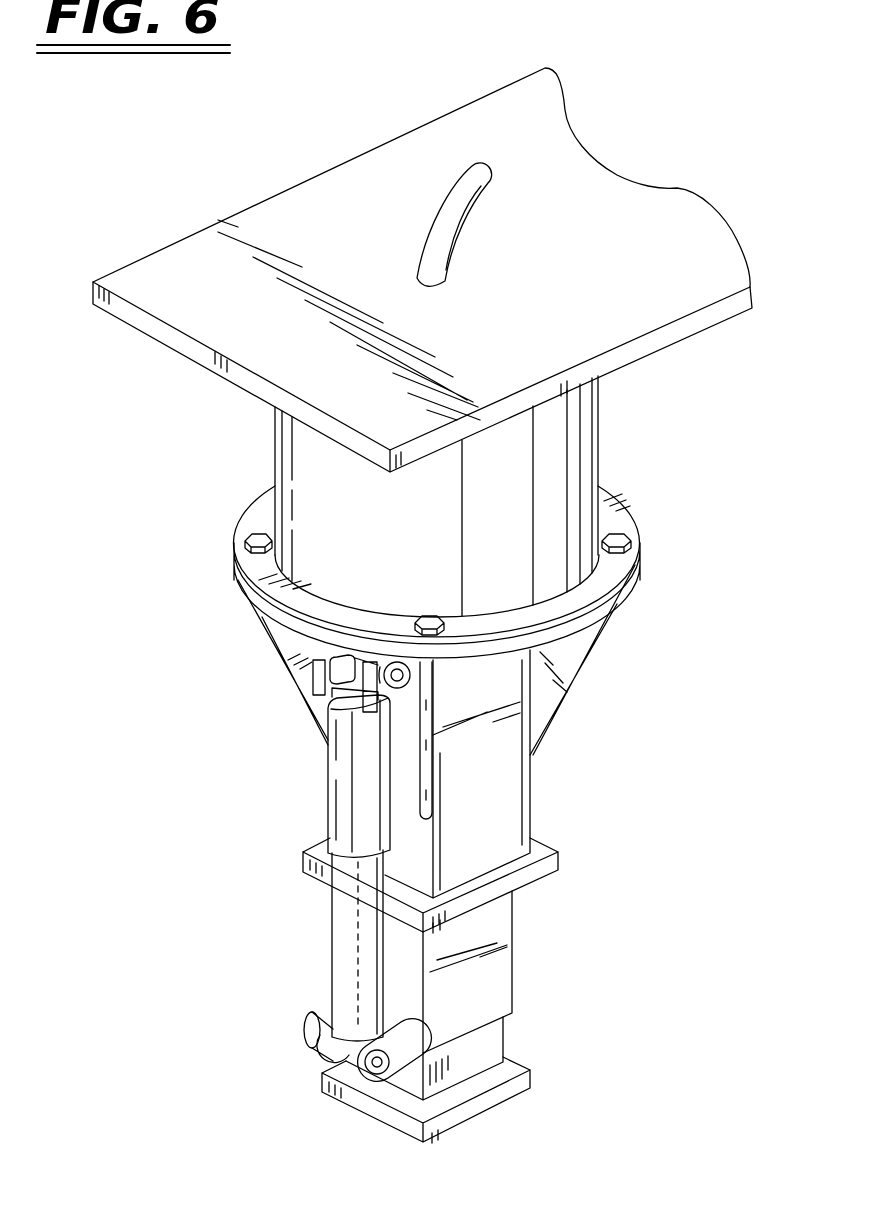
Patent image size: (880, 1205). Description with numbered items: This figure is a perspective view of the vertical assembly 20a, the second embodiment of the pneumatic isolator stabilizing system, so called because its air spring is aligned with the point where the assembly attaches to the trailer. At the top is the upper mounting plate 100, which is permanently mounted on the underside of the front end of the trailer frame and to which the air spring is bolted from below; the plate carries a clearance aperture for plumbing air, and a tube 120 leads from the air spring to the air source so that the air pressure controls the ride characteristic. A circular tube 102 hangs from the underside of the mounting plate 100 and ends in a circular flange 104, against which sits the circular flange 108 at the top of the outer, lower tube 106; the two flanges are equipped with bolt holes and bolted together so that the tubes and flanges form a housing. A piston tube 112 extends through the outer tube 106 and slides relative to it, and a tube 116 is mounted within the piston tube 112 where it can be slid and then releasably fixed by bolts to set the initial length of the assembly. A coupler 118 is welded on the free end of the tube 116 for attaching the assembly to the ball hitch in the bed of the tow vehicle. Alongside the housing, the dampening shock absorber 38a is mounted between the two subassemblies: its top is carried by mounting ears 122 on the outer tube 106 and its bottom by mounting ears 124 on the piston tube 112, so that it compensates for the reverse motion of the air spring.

The vertical assembly 20a is at (221, 662).
The dampening shock absorber 38a is at (353, 905).
The upper mounting plate 100 is at (660, 298).
The circular tube 102 is at (578, 447).
The circular flange 104 is at (592, 583).
The outer, lower tube 106 is at (497, 823).
The circular flange 108 is at (583, 636).
The piston member or tube 112 is at (497, 982).
The tube 116 is at (493, 1045).
The coupler 118 is at (483, 1103).
The tube 120 is at (442, 233).
The mounting ears 122 is at (380, 690).
The mounting ears 124 is at (400, 1042).